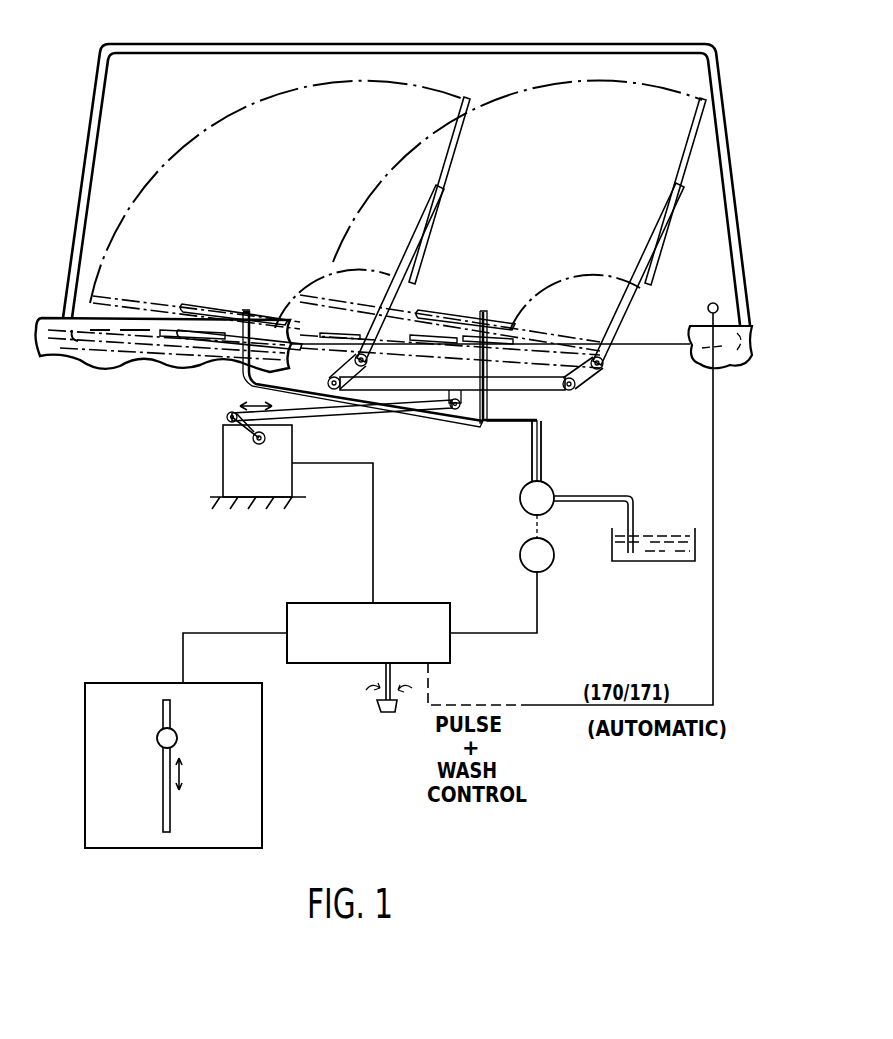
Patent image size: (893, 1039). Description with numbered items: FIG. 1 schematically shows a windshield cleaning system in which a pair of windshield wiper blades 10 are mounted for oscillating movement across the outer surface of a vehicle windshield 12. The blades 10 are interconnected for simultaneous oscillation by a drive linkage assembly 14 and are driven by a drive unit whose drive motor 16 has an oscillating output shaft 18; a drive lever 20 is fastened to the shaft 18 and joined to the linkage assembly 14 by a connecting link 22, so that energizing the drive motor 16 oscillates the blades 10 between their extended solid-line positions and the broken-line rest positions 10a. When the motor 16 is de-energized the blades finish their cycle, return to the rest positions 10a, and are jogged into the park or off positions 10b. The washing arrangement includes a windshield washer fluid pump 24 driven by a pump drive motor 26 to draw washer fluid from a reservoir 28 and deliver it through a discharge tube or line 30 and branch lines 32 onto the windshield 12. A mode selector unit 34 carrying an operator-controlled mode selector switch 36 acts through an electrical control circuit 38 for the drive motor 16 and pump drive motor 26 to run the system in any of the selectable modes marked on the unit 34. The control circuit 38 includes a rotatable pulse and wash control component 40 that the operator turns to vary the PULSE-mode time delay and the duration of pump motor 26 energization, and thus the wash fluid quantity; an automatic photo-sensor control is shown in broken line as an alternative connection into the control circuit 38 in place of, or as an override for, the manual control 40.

The windshield wiper blades 10 is at (454, 150).
The rest positions 10a is at (160, 300).
The park or off positions 10b is at (325, 322).
The vehicle windshield 12 is at (173, 68).
The drive linkage assembly 14 is at (546, 400).
The drive motor 16 is at (236, 474).
The oscillating output shaft 18 is at (252, 452).
The drive lever 20 is at (228, 428).
The connecting link 22 is at (322, 410).
The windshield washer fluid pump 24 is at (551, 490).
The pump drive motor 26 is at (552, 567).
The reservoir 28 is at (648, 566).
The discharge tube or line 30 is at (533, 452).
The branch lines 32 is at (243, 376).
The mode selector unit 34 is at (70, 689).
The mode selector switch 36 is at (160, 733).
The electrical control circuit 38 is at (304, 612).
The pulse and wash control component 40 is at (378, 704).